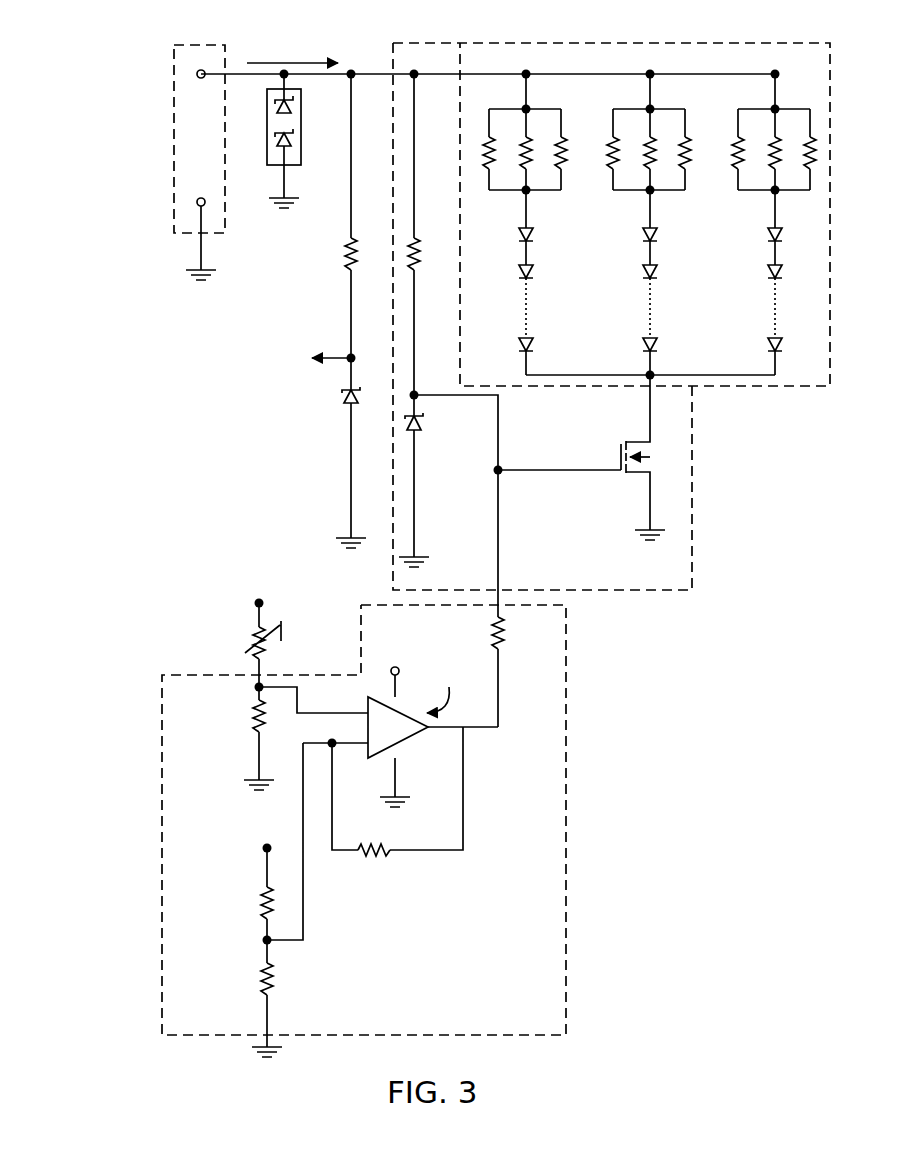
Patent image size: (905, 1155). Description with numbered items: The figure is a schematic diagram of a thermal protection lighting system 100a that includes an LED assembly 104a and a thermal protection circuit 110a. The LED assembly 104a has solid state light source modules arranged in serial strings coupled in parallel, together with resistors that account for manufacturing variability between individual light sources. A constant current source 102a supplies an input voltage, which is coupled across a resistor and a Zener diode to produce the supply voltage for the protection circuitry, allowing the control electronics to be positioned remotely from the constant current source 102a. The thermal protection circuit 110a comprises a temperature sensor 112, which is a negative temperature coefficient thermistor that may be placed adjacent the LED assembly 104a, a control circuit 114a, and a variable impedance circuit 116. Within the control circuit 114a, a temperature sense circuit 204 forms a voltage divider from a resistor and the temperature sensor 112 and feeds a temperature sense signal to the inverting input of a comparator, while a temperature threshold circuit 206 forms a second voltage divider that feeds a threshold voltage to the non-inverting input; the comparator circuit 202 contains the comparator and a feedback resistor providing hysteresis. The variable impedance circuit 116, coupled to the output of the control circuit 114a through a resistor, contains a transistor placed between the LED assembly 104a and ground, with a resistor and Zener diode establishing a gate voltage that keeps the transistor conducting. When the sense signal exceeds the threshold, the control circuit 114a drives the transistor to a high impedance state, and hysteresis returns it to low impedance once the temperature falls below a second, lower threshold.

The thermal protection lighting system 100a is at (136, 118).
The constant current source 102a is at (226, 218).
The LED assembly 104a is at (567, 43).
The thermal protection circuit 110a is at (663, 676).
The temperature sensor 112 is at (282, 658).
The control circuit 114a is at (566, 791).
The variable impedance circuit 116 is at (693, 488).
The comparator circuit 202 is at (491, 802).
The temperature sense circuit 204 is at (201, 702).
The temperature threshold circuit 206 is at (308, 967).